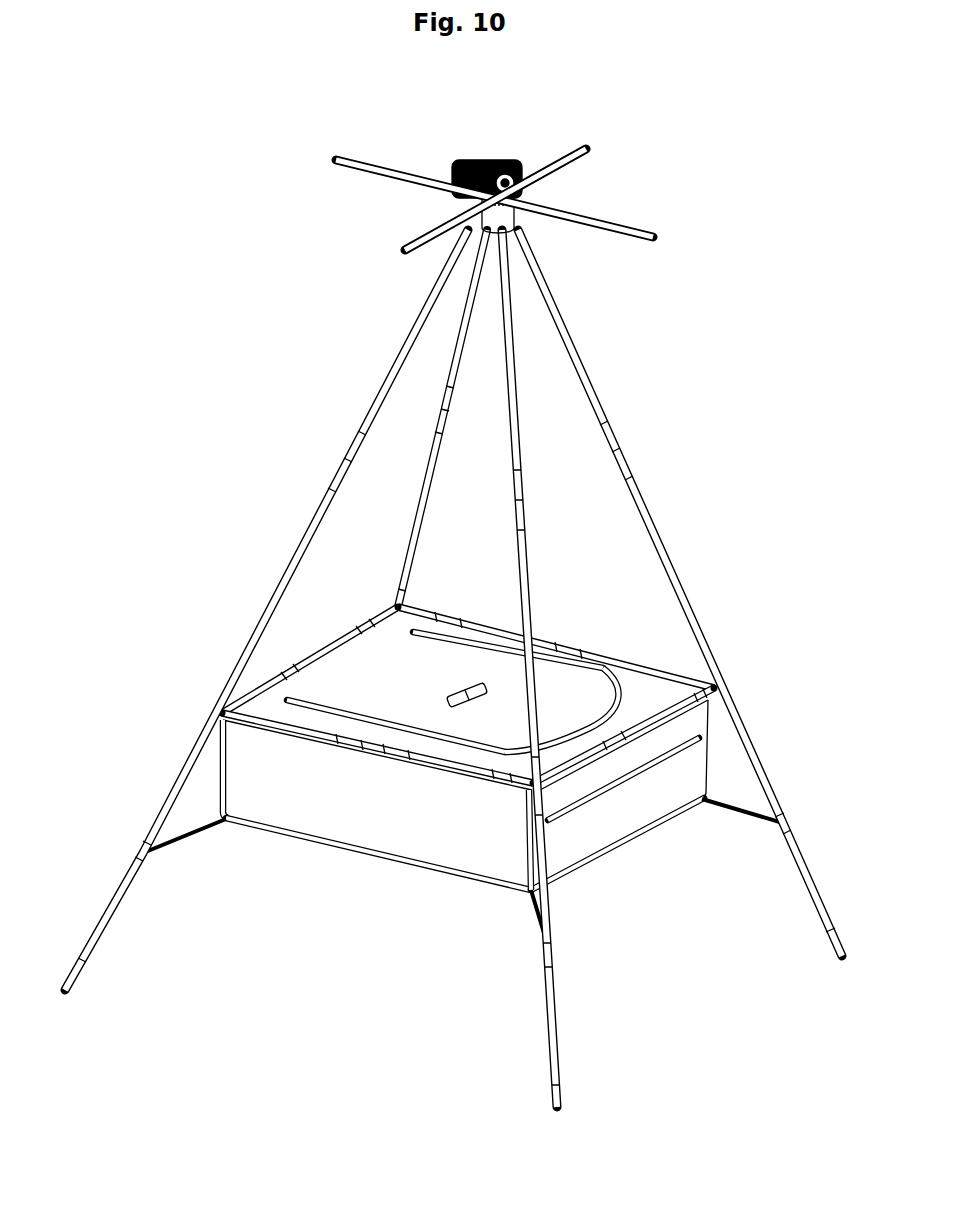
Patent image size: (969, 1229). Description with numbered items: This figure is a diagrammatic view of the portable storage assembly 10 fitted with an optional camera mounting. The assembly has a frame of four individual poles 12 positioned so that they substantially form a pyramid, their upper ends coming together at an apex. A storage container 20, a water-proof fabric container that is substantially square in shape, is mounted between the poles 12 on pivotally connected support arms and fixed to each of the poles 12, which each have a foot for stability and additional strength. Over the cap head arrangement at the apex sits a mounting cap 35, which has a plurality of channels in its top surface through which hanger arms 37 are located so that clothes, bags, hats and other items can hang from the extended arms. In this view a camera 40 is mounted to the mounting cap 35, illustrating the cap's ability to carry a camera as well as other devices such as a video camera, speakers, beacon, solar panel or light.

The portable storage assembly 10 is at (479, 573).
The pole 12 is at (688, 582).
The storage container 20 is at (620, 808).
The mounting cap 35 is at (513, 218).
The hanger arm 37 is at (612, 222).
The camera 40 is at (527, 132).